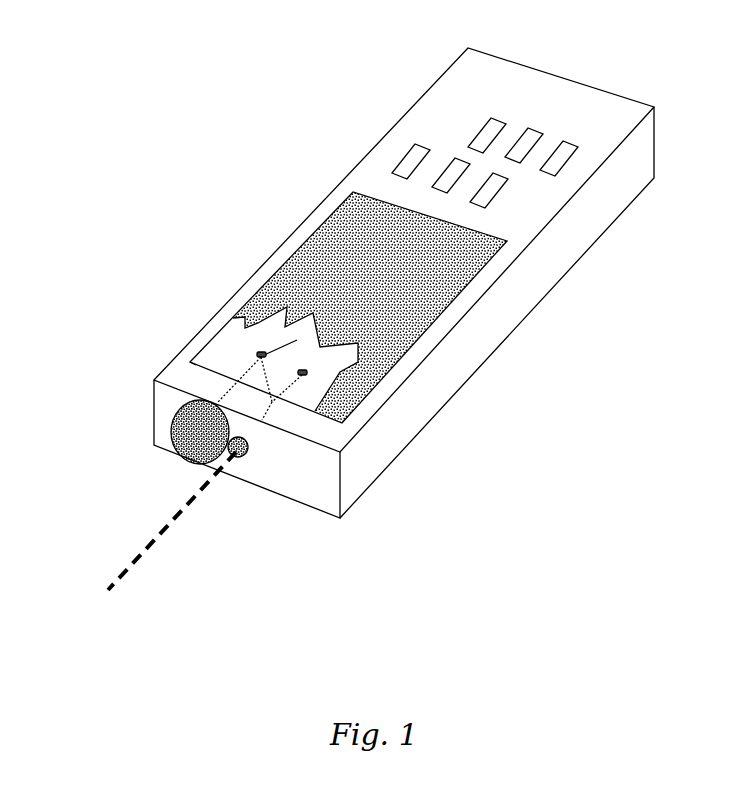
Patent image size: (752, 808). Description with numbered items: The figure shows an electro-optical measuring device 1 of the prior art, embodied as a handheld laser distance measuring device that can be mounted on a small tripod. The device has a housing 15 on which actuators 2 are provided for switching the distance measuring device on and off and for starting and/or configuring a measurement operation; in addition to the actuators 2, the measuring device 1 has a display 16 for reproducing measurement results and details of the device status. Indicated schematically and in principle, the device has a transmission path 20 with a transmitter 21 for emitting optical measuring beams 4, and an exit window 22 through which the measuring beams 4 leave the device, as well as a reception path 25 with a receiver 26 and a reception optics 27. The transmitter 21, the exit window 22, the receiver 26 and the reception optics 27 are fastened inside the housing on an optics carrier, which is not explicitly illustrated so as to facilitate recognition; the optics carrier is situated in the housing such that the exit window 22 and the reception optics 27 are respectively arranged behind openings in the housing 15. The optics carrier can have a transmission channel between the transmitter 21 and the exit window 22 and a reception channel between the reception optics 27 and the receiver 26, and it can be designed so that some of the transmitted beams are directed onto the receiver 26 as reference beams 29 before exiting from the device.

The electro-optical measuring device 1 is at (362, 42).
The housing 15 is at (423, 235).
The actuators 2 is at (531, 175).
The display 16 is at (407, 307).
The reference beams 29 is at (263, 277).
The receiver 26 is at (203, 322).
The reception path 25 is at (192, 374).
The reception optics 27 is at (134, 432).
The exit window 22 is at (262, 501).
The optical measuring beams 4 is at (193, 541).
The transmitter 21 is at (406, 406).
The transmission path 20 is at (369, 441).